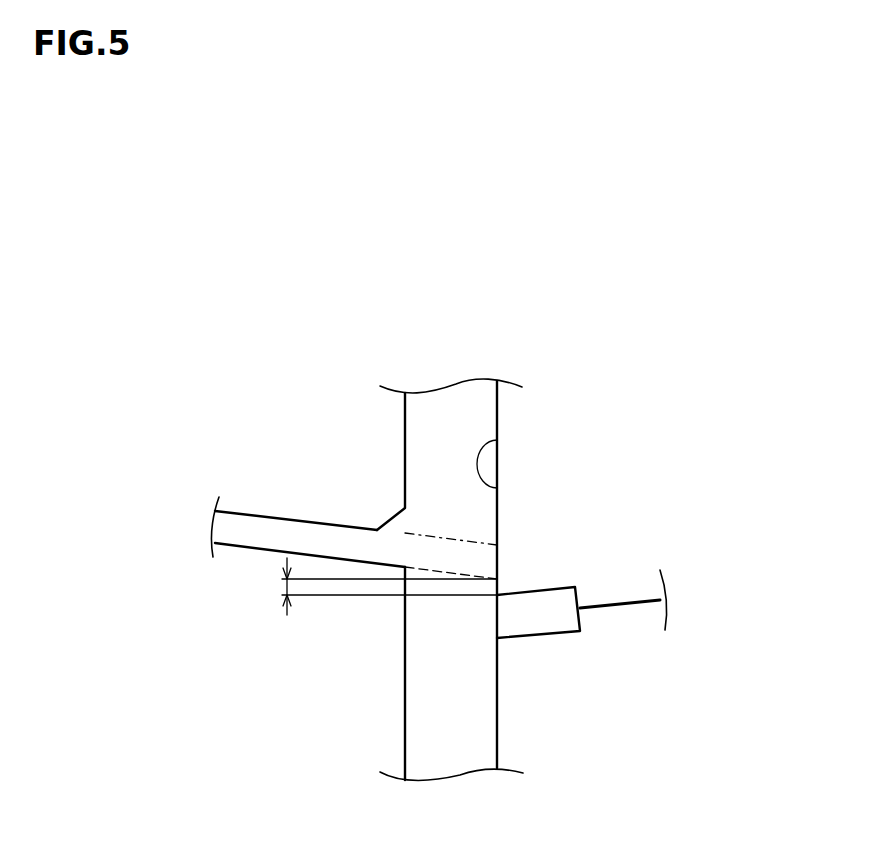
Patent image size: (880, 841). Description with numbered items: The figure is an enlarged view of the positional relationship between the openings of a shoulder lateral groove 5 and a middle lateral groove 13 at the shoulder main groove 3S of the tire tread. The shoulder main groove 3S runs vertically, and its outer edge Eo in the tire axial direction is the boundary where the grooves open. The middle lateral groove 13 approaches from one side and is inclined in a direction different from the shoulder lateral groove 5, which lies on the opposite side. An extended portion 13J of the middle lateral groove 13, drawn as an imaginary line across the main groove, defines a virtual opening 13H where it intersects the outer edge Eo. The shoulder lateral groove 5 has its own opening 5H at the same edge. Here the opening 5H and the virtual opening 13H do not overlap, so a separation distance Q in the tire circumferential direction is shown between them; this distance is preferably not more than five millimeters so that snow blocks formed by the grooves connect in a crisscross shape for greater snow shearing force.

The shoulder main groove 3S is at (452, 435).
The middle lateral groove 13 is at (268, 537).
The extended portion of the middle lateral groove 13J is at (405, 533).
The virtual opening 13H is at (513, 560).
The outer edge of the shoulder main groove Eo is at (497, 440).
The shoulder lateral groove 5 is at (548, 608).
The opening of the shoulder lateral groove 5H is at (483, 620).
The separation distance Q is at (375, 586).